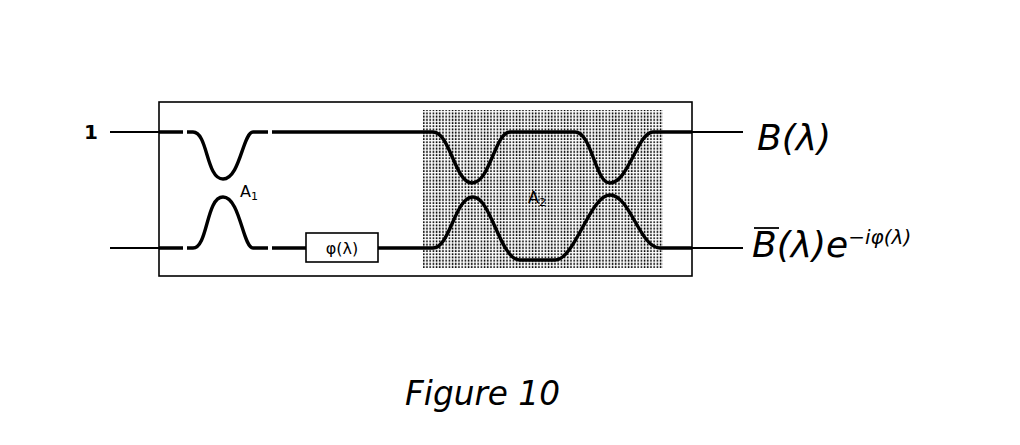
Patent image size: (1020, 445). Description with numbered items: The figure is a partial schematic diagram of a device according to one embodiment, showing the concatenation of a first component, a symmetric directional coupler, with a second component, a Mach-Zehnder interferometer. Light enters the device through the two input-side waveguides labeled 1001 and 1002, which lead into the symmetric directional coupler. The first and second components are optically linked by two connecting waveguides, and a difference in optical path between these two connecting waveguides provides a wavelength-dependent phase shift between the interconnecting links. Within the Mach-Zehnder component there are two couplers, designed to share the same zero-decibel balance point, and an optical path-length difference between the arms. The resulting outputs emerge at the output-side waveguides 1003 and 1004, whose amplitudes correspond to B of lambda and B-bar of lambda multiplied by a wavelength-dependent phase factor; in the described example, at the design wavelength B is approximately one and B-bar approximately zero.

The first input port 1001 is at (155, 128).
The second input port 1002 is at (148, 258).
The first output port 1003 is at (705, 125).
The second output port 1004 is at (705, 255).